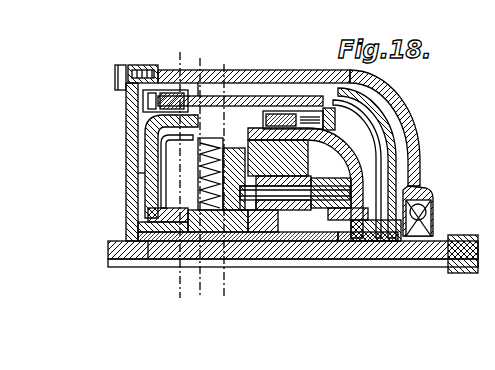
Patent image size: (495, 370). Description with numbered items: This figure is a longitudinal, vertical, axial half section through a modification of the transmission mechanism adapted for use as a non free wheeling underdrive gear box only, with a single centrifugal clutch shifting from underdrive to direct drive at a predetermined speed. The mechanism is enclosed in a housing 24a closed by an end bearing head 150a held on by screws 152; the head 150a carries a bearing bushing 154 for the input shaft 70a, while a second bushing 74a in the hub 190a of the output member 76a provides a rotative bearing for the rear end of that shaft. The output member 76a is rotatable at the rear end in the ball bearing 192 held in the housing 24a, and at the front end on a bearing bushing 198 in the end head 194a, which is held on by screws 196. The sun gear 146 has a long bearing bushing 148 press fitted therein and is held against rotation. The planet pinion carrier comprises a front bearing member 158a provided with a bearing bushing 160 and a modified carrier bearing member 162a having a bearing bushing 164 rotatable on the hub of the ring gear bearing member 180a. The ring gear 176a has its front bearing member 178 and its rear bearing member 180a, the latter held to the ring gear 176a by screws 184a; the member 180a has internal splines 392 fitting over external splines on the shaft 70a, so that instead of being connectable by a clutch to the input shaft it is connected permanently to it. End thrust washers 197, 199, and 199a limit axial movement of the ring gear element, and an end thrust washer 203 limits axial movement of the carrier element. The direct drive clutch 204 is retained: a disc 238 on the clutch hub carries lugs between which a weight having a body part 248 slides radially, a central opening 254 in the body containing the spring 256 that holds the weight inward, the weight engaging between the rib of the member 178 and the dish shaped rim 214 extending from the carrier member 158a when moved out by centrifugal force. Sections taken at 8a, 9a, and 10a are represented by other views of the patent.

The section line 8a— 8a is at (184, 45).
The section line 9a— 9a is at (206, 52).
The section line 10a— 10a is at (230, 58).
The housing 24a is at (368, 85).
The input shaft 70a is at (100, 238).
The bushing 74a is at (440, 238).
The output member 76a is at (384, 138).
The sun gear 146 is at (276, 205).
The bearing bushing 148 is at (292, 195).
The end bearing head 150a is at (137, 92).
The screws 152 is at (107, 68).
The bearing bushing 154 is at (130, 228).
The front bearing member 158a is at (240, 205).
The bearing bushing 160 is at (248, 228).
The carrier bearing member 162a is at (318, 148).
The bearing bushing 164 is at (318, 205).
The ring gear 176a is at (290, 103).
The front bearing member 178 is at (252, 68).
The ring gear bearing member 180a is at (372, 162).
The screws 184a is at (320, 100).
The hub 190a is at (424, 214).
The ball bearing 192 is at (422, 190).
The end head 194a is at (153, 150).
The screws 196 is at (137, 115).
The end thrust washer 197 is at (150, 200).
The bearing bushing 198 is at (142, 248).
The end thrust washer 199 is at (130, 210).
The end thrust washer 199a is at (378, 240).
The end thrust washer 203 is at (338, 215).
The direct drive clutch 204 is at (192, 80).
The dish shaped rim 214 is at (236, 98).
The disc 238 is at (214, 228).
The body part 248 is at (137, 165).
The central opening 254 is at (200, 135).
The spring 256 is at (236, 150).
The internal splines 392 is at (358, 240).